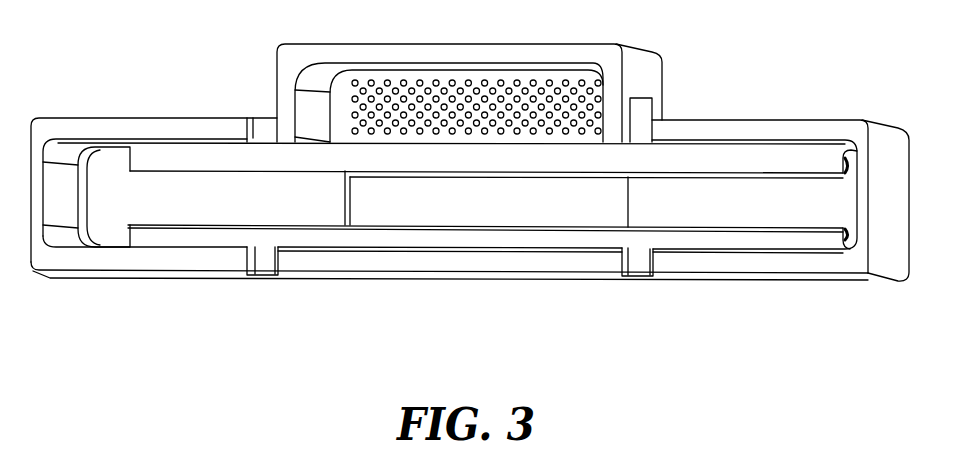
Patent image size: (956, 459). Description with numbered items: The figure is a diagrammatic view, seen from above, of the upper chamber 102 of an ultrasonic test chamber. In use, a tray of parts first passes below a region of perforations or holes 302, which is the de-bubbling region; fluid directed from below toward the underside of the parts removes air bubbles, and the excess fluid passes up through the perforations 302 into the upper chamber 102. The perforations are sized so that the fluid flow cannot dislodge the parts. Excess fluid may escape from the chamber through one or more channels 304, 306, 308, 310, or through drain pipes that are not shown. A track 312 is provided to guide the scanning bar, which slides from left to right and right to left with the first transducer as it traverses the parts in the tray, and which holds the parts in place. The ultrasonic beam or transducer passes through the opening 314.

The upper chamber 102 is at (293, 385).
The region of perforations or holes 302 is at (370, 82).
The channel 304 is at (267, 122).
The channel 306 is at (640, 123).
The channel 308 is at (265, 268).
The channel 310 is at (640, 268).
The track 312 is at (155, 202).
The opening 314 is at (483, 203).